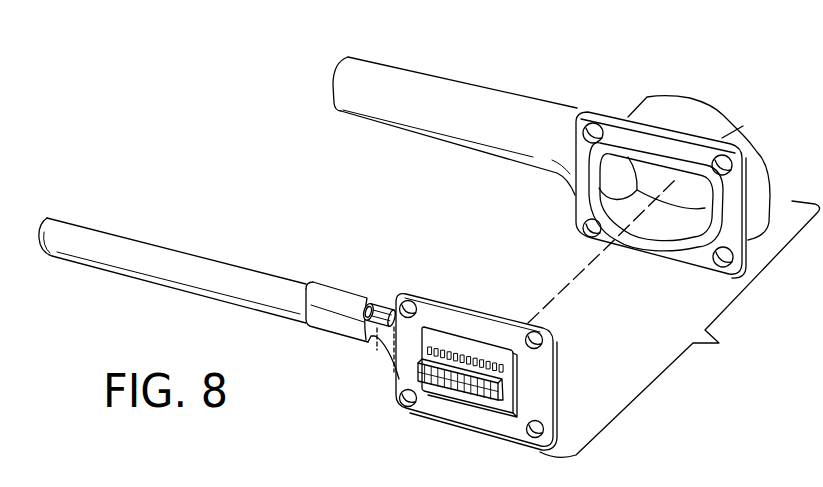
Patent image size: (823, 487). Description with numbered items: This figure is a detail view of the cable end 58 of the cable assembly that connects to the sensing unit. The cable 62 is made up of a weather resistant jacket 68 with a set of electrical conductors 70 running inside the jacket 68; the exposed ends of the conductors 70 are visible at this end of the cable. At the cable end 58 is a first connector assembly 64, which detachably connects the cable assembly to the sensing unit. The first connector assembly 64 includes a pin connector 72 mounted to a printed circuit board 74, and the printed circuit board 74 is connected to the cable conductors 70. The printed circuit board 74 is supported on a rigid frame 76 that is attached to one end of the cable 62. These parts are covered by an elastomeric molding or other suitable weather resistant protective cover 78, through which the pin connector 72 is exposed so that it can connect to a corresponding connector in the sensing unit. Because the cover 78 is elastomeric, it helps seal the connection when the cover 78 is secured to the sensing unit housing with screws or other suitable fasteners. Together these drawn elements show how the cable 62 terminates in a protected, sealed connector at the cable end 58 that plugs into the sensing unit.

The cable end 58 is at (298, 329).
The cable 62 is at (134, 252).
The first connector assembly 64 is at (680, 329).
The weather resistant jacket 68 is at (199, 272).
The electrical conductors 70 is at (383, 305).
The pin connector 72 is at (450, 387).
The printed circuit board 74 is at (501, 405).
The rigid frame 76 is at (402, 378).
The protective cover 78 is at (523, 110).